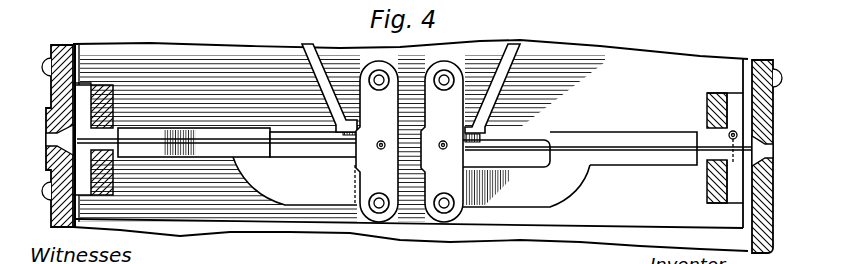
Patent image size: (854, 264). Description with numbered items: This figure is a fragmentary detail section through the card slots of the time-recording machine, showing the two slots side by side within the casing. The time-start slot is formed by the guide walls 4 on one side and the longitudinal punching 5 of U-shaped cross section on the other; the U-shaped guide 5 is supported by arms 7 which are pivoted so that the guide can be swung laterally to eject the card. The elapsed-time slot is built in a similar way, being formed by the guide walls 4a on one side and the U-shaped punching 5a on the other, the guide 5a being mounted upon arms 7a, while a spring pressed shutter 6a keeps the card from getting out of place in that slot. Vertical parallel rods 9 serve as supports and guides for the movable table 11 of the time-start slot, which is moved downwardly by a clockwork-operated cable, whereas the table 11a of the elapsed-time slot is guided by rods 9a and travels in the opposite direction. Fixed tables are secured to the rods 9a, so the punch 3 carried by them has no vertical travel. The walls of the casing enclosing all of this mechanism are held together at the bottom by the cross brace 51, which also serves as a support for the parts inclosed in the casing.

The punch 3 is at (48, 141).
The guide walls 4 is at (103, 85).
The guide walls 4a is at (116, 186).
The longitudinal punching 5 is at (347, 158).
The U-shaped punching 5a is at (472, 130).
The spring pressed shutter 6a is at (760, 128).
The arms 7 is at (320, 50).
The arms 7a is at (506, 99).
The vertical parallel rods 9 is at (379, 91).
The rods 9a is at (444, 91).
The movable table 11 is at (286, 196).
The table 11a is at (526, 186).
The cross brace 51 is at (548, 232).